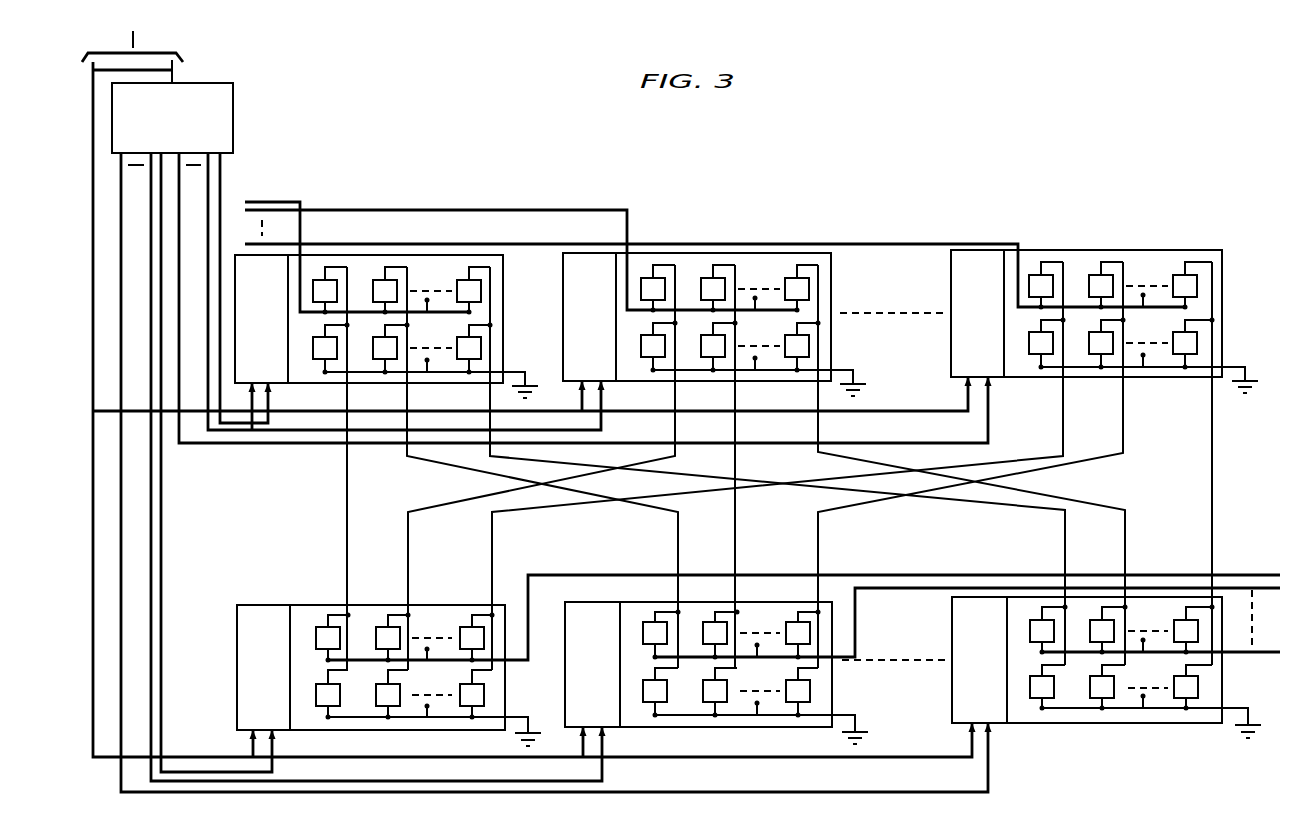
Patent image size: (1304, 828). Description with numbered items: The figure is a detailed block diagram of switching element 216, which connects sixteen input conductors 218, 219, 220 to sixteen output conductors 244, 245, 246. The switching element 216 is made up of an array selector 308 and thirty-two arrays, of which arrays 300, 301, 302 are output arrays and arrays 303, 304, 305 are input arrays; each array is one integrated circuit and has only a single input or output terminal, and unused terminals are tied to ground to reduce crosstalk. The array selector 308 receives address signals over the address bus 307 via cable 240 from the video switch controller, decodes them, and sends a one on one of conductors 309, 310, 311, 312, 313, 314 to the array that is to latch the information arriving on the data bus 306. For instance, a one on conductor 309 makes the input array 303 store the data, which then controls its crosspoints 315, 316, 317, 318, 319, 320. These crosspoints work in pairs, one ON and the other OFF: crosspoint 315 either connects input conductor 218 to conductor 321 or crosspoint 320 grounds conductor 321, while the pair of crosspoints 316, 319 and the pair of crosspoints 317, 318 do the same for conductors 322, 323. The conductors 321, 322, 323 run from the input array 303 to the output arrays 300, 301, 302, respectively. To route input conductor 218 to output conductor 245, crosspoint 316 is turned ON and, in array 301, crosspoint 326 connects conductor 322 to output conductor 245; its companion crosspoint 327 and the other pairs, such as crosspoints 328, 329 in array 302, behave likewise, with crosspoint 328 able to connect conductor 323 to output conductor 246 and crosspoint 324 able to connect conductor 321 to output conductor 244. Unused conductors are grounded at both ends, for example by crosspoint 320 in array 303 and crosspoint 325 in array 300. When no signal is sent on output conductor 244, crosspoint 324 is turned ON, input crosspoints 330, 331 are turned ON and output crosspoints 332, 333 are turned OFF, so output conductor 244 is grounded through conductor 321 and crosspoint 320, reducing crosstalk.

The switching element 216 is at (812, 132).
The cable 240 is at (137, 38).
The data bus 306 is at (176, 66).
The address bus 307 is at (176, 72).
The array selector 308 is at (235, 117).
The output conductor 244 is at (283, 201).
The output conductor 245 is at (560, 209).
The output conductor 246 is at (925, 243).
The output array 300 is at (393, 312).
The output array 301 is at (754, 309).
The output array 302 is at (1104, 298).
The input array 303 is at (650, 510).
The input array 304 is at (836, 603).
The input array 305 is at (1150, 600).
The conductor 309 is at (165, 538).
The conductor 310 is at (127, 578).
The conductor 311 is at (238, 445).
The conductor 312 is at (154, 558).
The conductor 313 is at (216, 452).
The conductor 314 is at (264, 446).
The crosspoint 315 is at (316, 625).
The crosspoint 316 is at (378, 625).
The crosspoint 317 is at (462, 625).
The crosspoint 318 is at (463, 707).
The crosspoint 319 is at (380, 707).
The crosspoint 320 is at (320, 707).
The conductor 321 is at (345, 553).
The conductor 322 is at (407, 553).
The conductor 323 is at (490, 553).
The crosspoint 324 is at (317, 280).
The crosspoint 325 is at (317, 360).
The crosspoint 326 is at (646, 278).
The crosspoint 327 is at (645, 357).
The crosspoint 328 is at (1036, 275).
The crosspoint 329 is at (1035, 354).
The input crosspoint 330 is at (378, 360).
The input crosspoint 331 is at (462, 360).
The output crosspoint 332 is at (381, 280).
The output crosspoint 333 is at (465, 280).
The input conductor 218 is at (1256, 573).
The input conductor 219 is at (1236, 586).
The input conductor 220 is at (1270, 654).